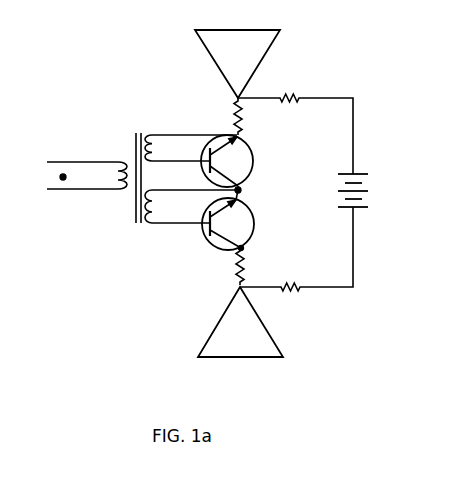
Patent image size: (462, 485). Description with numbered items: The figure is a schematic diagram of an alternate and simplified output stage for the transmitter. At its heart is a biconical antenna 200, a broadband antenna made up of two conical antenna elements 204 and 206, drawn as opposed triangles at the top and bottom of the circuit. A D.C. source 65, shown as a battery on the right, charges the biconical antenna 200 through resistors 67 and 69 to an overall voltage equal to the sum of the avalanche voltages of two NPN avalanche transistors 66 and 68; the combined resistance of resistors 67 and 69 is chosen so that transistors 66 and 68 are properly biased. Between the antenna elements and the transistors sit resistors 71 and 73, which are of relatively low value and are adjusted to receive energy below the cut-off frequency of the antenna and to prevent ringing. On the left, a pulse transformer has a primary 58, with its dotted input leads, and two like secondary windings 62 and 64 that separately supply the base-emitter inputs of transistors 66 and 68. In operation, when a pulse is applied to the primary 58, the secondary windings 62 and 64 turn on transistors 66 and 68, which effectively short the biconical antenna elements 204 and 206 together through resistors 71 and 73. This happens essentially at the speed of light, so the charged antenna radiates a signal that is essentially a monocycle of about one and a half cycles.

The biconical antenna 200 is at (270, 10).
The biconical antenna element 204 is at (268, 50).
The biconical antenna element 206 is at (272, 338).
The resistor 71 is at (235, 115).
The resistor 73 is at (246, 265).
The resistor 67 is at (292, 102).
The resistor 69 is at (290, 282).
The D.C. source 65 is at (357, 170).
The NPN avalanche transistor 66 is at (256, 161).
The NPN avalanche transistor 68 is at (256, 221).
The primary 58 is at (112, 163).
The secondary winding 62 is at (148, 137).
The secondary winding 64 is at (157, 226).